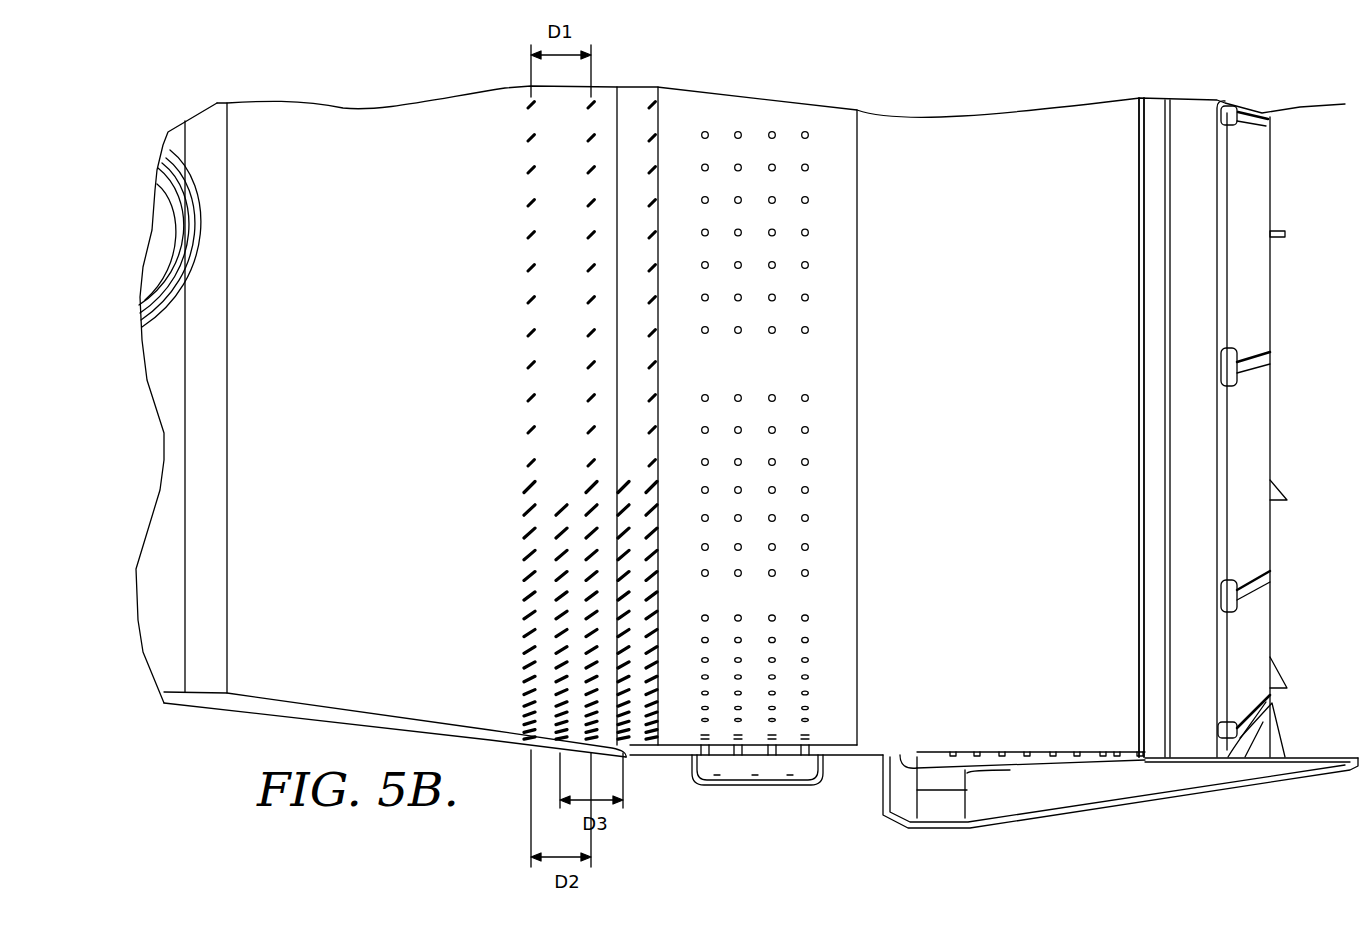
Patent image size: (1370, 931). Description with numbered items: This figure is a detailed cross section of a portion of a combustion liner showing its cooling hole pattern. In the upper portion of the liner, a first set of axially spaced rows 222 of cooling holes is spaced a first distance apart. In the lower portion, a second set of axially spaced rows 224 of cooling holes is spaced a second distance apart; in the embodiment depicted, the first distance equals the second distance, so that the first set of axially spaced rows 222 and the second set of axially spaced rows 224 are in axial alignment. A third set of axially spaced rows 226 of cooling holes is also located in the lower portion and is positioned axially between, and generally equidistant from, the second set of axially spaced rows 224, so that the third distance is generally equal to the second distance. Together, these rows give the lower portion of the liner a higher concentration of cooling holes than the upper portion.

The first set of axially spaced rows 222 is at (693, 72).
The second set of axially spaced rows 224 is at (496, 480).
The third set of axially spaced rows 226 is at (563, 487).